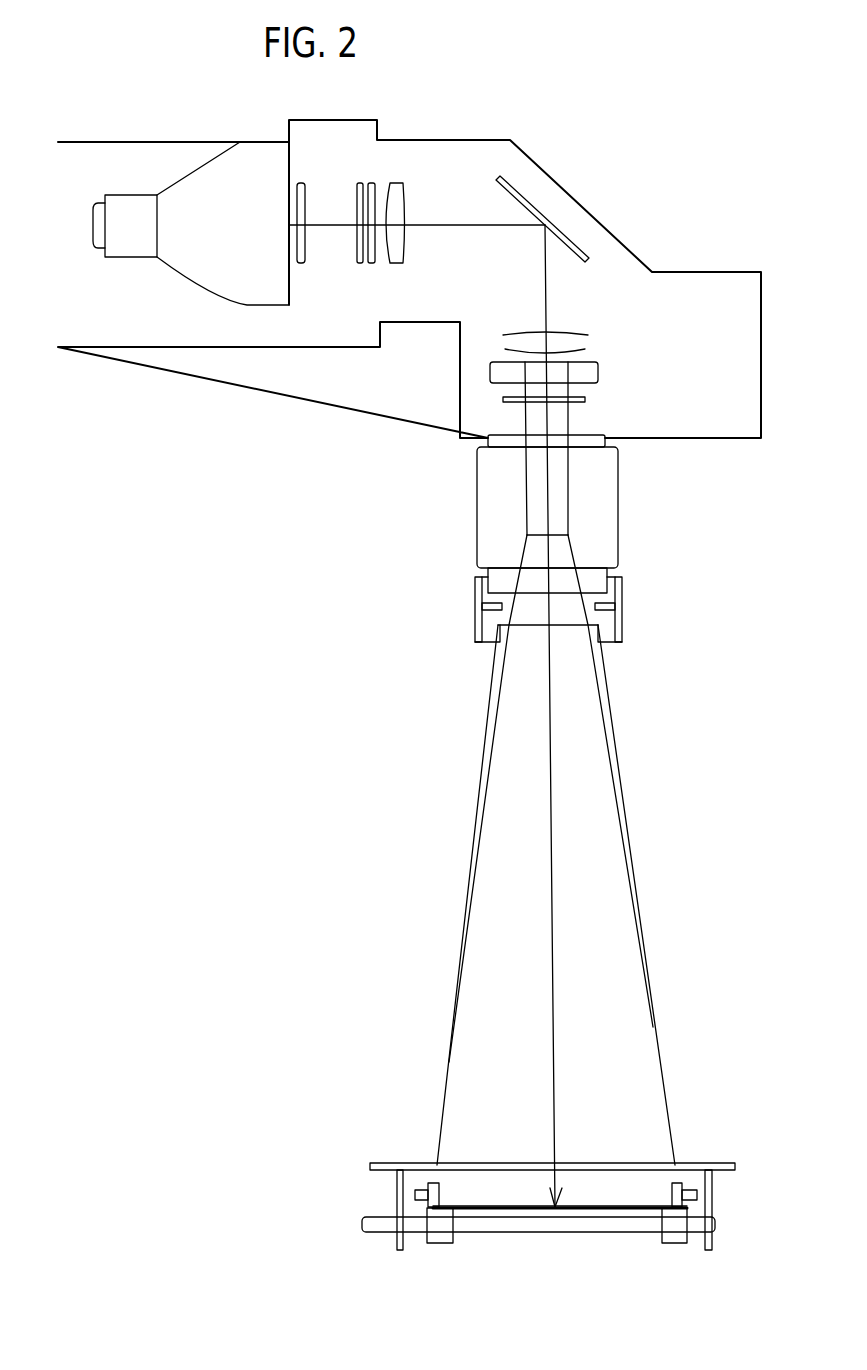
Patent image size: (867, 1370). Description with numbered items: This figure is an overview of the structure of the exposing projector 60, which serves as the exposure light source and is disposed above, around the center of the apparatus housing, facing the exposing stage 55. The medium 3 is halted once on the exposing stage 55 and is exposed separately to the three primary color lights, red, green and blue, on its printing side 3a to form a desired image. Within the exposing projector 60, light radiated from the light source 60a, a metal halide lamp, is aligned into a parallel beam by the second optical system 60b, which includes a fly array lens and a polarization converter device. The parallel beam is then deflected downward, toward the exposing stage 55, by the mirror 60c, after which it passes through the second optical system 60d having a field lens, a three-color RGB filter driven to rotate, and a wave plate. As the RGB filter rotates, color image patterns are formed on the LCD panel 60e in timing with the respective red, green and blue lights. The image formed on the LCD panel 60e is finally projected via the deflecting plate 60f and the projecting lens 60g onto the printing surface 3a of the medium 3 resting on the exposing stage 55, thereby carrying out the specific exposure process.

The exposing projector 60 is at (596, 198).
The light source 60a is at (184, 174).
The second optical system 60b is at (398, 165).
The mirror 60c is at (582, 247).
The second optical system 60d is at (570, 328).
The LCD panel 60e is at (489, 372).
The deflecting plate 60f is at (586, 396).
The projecting lens 60g is at (600, 557).
The medium 3 is at (605, 1207).
The printing side 3a is at (510, 1202).
The exposing stage 55 is at (545, 1237).